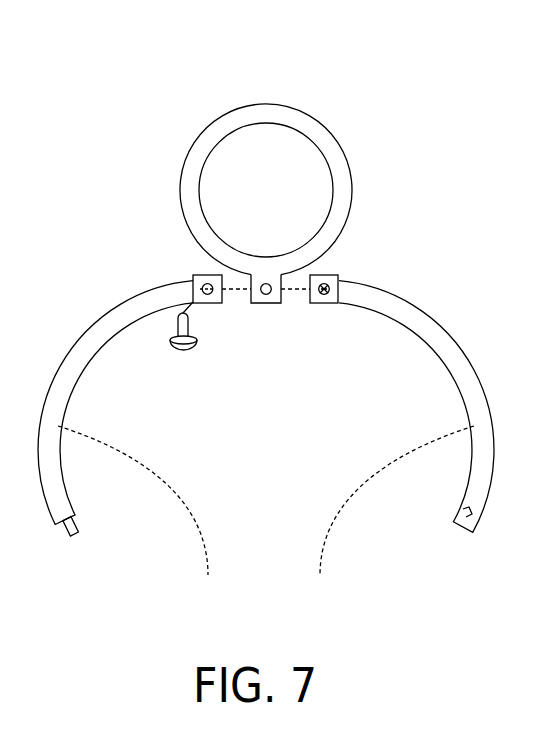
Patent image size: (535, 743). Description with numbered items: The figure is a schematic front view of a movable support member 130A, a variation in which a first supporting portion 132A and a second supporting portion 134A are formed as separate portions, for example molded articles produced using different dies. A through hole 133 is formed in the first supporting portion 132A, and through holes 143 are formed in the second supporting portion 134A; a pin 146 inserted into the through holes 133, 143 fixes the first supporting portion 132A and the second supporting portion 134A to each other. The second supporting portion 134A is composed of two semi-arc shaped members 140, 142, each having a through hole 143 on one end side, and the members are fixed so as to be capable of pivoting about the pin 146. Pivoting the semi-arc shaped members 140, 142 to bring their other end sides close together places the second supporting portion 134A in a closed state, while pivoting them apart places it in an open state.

The movable support member 130A is at (175, 110).
The first supporting portion 132A is at (347, 188).
The through hole 133 is at (266, 300).
The second supporting portion 134A is at (266, 466).
The semi-arc shaped member 140 is at (132, 445).
The semi-arc shaped member 142 is at (396, 445).
The through hole 143 is at (208, 295).
The pin 146 is at (185, 350).